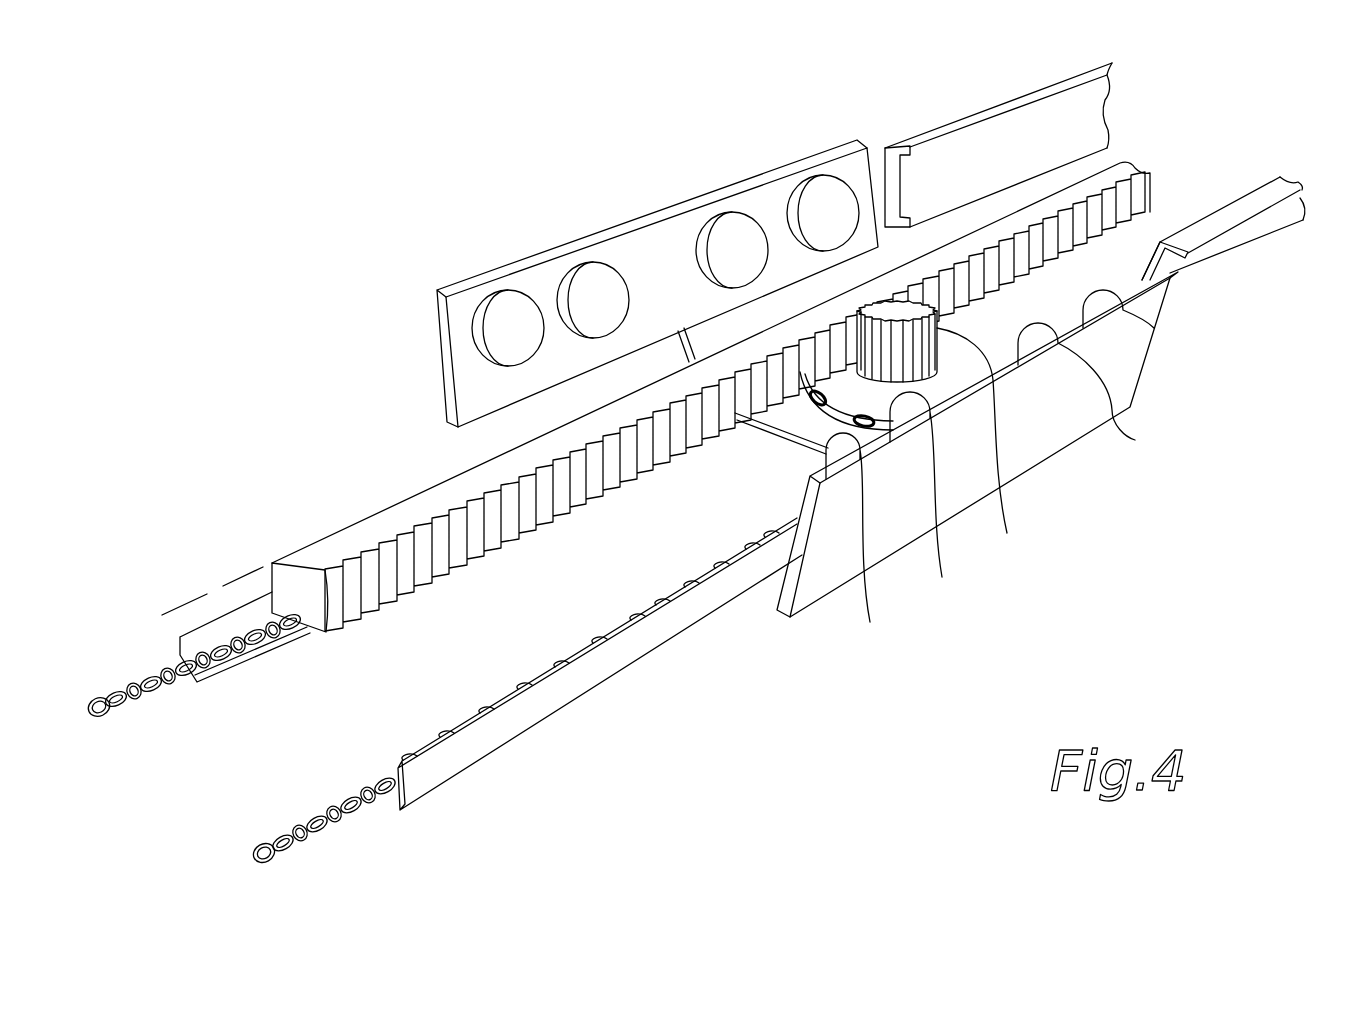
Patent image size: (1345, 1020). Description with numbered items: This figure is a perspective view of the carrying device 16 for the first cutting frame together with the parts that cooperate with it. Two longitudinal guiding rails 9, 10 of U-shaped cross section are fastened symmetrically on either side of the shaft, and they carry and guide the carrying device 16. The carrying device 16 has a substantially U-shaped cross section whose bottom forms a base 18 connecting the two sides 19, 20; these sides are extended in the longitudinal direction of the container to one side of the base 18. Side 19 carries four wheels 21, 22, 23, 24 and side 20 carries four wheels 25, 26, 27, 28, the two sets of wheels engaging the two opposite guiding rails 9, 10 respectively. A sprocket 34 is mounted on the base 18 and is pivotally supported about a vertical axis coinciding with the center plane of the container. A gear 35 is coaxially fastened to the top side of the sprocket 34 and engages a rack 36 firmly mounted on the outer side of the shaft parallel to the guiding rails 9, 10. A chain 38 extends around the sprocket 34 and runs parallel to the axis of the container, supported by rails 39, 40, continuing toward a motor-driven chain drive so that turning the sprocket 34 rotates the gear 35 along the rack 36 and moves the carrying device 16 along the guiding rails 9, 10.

The longitudinal guiding rail 9 is at (1268, 232).
The longitudinal guiding rail 10 is at (1010, 130).
The carrying device 16 is at (1067, 420).
The base 18 is at (790, 412).
The side 19 is at (1130, 352).
The side 20 is at (768, 195).
The wheel 21 is at (1160, 328).
The wheel 22 is at (1135, 440).
The wheel 23 is at (942, 577).
The wheel 24 is at (870, 622).
The wheel 25 is at (825, 200).
The wheel 26 is at (732, 240).
The wheel 27 is at (600, 290).
The wheel 28 is at (512, 325).
The sprocket 34 is at (1007, 533).
The gear 35 is at (920, 350).
The rack 36 is at (410, 510).
The chain 38 is at (330, 828).
The rail 39 is at (490, 735).
The rail 40 is at (232, 628).